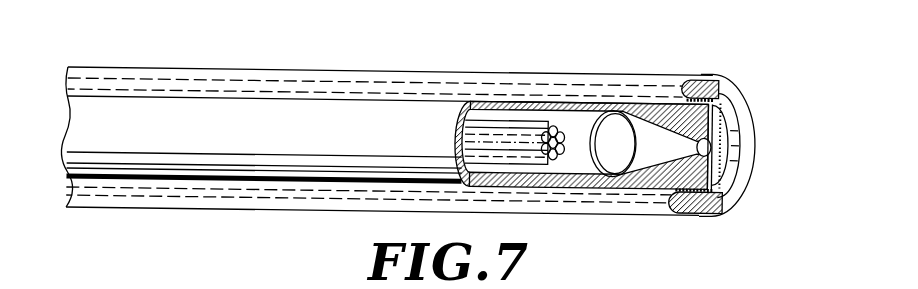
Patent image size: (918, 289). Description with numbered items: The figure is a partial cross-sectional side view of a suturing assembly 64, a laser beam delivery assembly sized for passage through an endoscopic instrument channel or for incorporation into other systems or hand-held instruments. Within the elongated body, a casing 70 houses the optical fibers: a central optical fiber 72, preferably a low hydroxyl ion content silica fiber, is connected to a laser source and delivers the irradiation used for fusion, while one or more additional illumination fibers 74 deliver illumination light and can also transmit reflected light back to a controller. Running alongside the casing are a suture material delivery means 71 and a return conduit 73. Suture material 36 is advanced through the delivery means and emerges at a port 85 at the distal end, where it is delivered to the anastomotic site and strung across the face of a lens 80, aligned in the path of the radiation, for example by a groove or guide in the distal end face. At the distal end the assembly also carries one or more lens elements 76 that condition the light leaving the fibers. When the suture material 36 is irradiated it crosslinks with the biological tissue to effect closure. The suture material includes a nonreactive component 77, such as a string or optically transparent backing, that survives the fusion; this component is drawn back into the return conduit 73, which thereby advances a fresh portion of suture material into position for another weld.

The suturing assembly 64 is at (116, 55).
The casing 70 is at (155, 108).
The suture material delivery means 71 is at (317, 86).
The central optical fiber 72 is at (563, 147).
The return conduit 73 is at (253, 190).
The illumination fibers 74 is at (508, 133).
The lens elements 76 is at (622, 137).
The nonreactive component 77 is at (718, 215).
The lens 80 is at (676, 102).
The port 85 is at (741, 78).
The suture material 36 is at (740, 130).